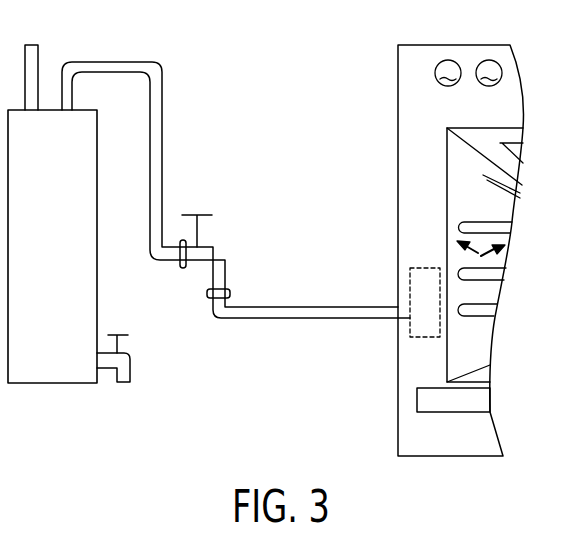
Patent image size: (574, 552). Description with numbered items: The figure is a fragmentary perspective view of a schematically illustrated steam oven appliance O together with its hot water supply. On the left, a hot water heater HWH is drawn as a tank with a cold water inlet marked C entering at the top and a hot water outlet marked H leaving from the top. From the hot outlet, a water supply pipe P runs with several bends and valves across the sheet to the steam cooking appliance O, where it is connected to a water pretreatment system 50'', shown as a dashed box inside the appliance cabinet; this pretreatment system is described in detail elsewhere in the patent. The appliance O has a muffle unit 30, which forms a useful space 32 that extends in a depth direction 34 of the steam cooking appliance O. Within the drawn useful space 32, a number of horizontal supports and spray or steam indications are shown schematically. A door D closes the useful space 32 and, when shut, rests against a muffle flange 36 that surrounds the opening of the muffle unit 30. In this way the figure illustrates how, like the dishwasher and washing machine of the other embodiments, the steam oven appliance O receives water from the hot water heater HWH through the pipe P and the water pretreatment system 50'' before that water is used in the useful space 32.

The muffle flange 36 is at (430, 122).
The muffle unit 30 is at (473, 173).
The useful space 32 is at (498, 205).
The depth direction 34 is at (482, 258).
The water pretreatment system 50'' is at (423, 267).
The hot water heater HWH is at (69, 246).
The cold water inlet C is at (47, 86).
The hot water outlet H is at (128, 52).
The water supply pipe P is at (268, 316).
The door D is at (427, 400).
The steam oven appliance O is at (358, 243).